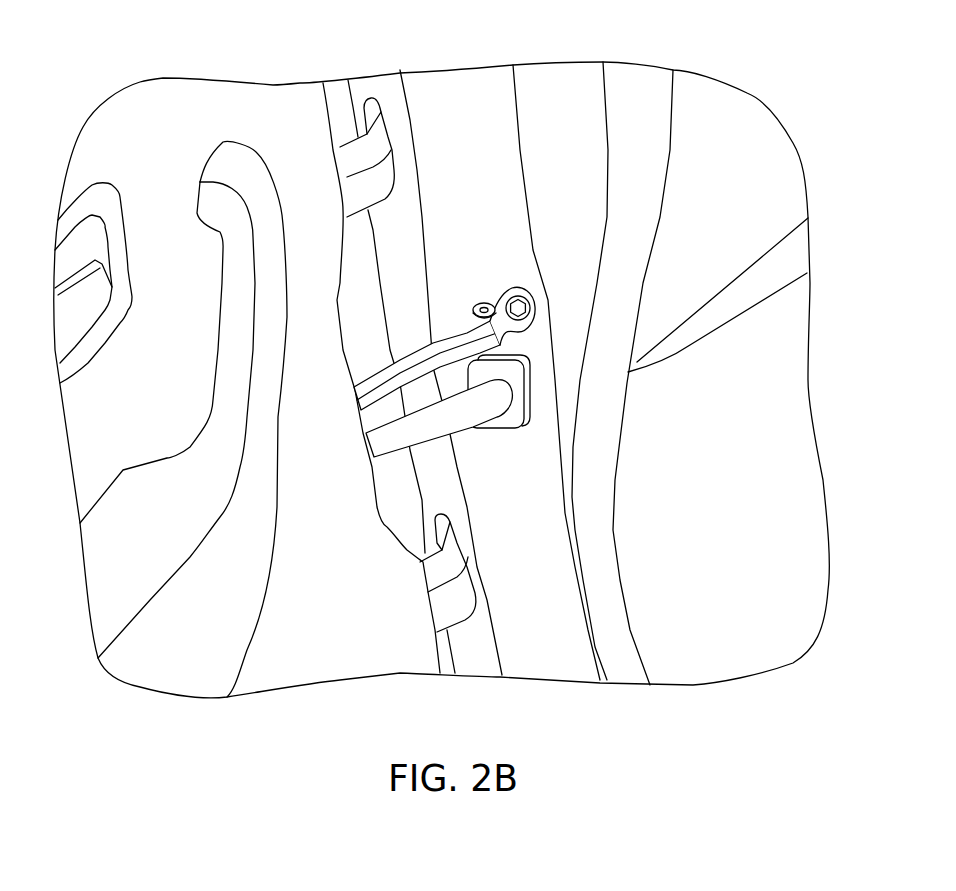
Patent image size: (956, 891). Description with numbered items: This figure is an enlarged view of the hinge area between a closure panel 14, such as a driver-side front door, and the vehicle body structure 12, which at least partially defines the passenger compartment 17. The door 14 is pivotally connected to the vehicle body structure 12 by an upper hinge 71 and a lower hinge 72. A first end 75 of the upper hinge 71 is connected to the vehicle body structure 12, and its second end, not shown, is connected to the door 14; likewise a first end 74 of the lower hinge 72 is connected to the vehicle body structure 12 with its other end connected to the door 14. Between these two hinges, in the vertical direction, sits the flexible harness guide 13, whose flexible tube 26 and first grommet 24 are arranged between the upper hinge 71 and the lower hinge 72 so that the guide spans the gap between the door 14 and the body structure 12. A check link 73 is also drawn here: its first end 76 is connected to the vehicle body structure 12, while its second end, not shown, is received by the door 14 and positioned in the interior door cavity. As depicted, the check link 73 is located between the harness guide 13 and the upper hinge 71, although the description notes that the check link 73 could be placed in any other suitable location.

The vehicle body structure 12 is at (478, 187).
The flexible harness guide 13 is at (538, 381).
The closure panel 14 is at (163, 146).
The passenger compartment 17 is at (708, 643).
The first grommet 24 is at (507, 440).
The flexible tube 26 is at (396, 464).
The upper hinge 71 is at (397, 129).
The lower hinge 72 is at (476, 586).
The check link 73 is at (372, 367).
The first end of the lower hinge 74 is at (461, 541).
The first end of the upper hinge 75 is at (368, 100).
The first end of the check link 76 is at (481, 303).